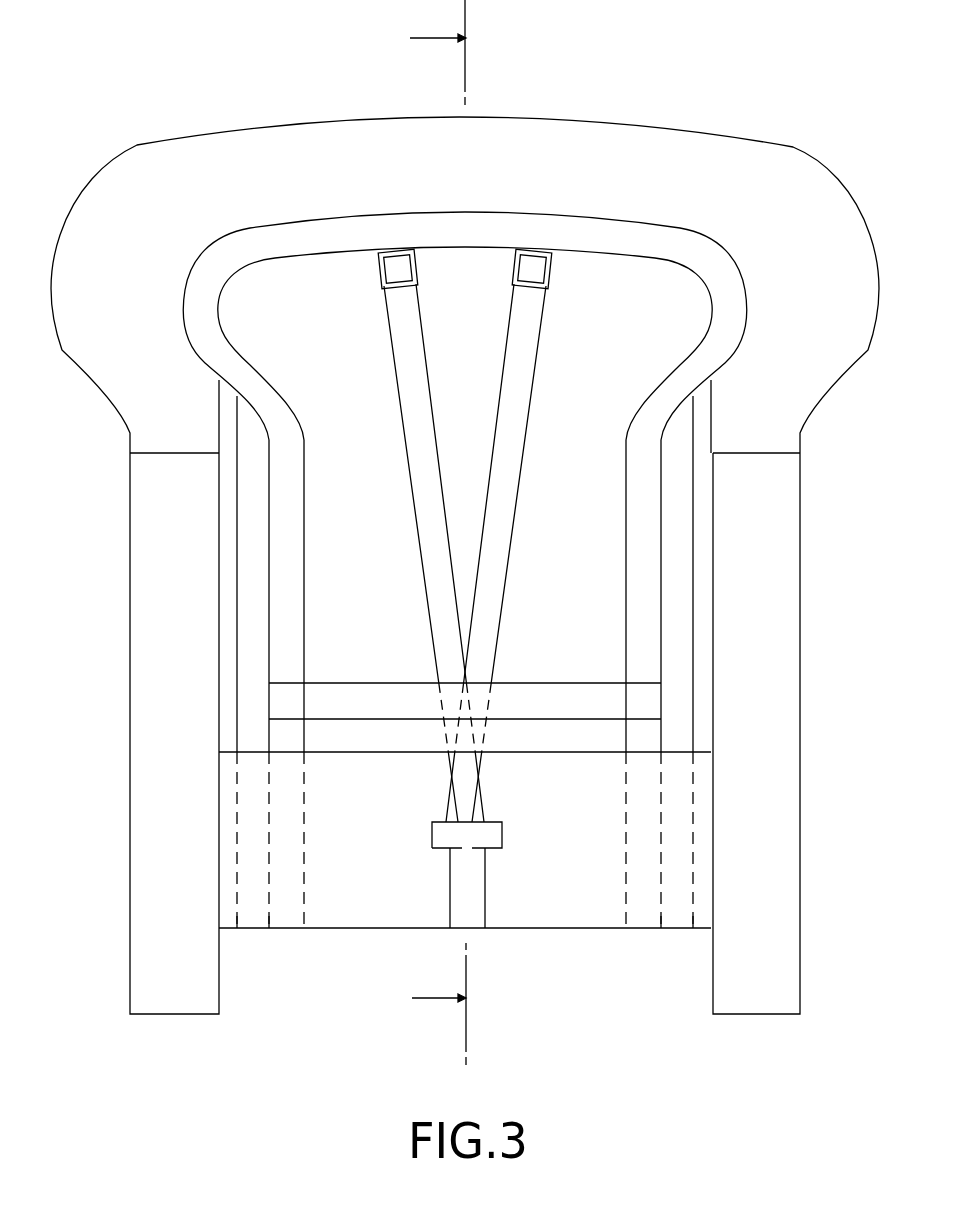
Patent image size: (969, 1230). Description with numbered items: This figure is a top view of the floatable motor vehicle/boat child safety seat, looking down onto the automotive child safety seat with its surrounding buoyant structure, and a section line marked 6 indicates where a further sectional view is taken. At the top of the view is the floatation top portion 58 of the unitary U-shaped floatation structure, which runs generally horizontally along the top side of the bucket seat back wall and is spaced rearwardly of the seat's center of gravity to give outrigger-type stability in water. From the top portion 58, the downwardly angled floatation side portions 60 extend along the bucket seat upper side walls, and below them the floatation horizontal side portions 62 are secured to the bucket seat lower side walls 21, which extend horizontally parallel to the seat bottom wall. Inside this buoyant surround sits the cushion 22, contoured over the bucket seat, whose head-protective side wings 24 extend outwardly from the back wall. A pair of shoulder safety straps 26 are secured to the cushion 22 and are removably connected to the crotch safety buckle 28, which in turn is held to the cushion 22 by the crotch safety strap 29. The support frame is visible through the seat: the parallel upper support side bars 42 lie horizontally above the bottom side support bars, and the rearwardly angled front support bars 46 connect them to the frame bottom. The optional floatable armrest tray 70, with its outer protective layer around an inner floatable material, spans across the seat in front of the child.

The section line 6- 6 is at (455, 532).
The bucket seat lower side walls 21 is at (248, 918).
The cushion 22 is at (283, 913).
The head-protective side wings 24 is at (200, 280).
The shoulder safety straps 26 is at (508, 385).
The crotch safety buckle 28 is at (478, 835).
The crotch safety strap 29 is at (470, 898).
The upper support side bars 42 is at (225, 645).
The rearwardly angled front support bars 46 is at (230, 900).
The floatation top portion 58 is at (576, 132).
The downwardly angled floatation side portions 60 is at (160, 420).
The floatation horizontal side portions 62 is at (142, 797).
The floatable armrest tray 70 is at (412, 755).